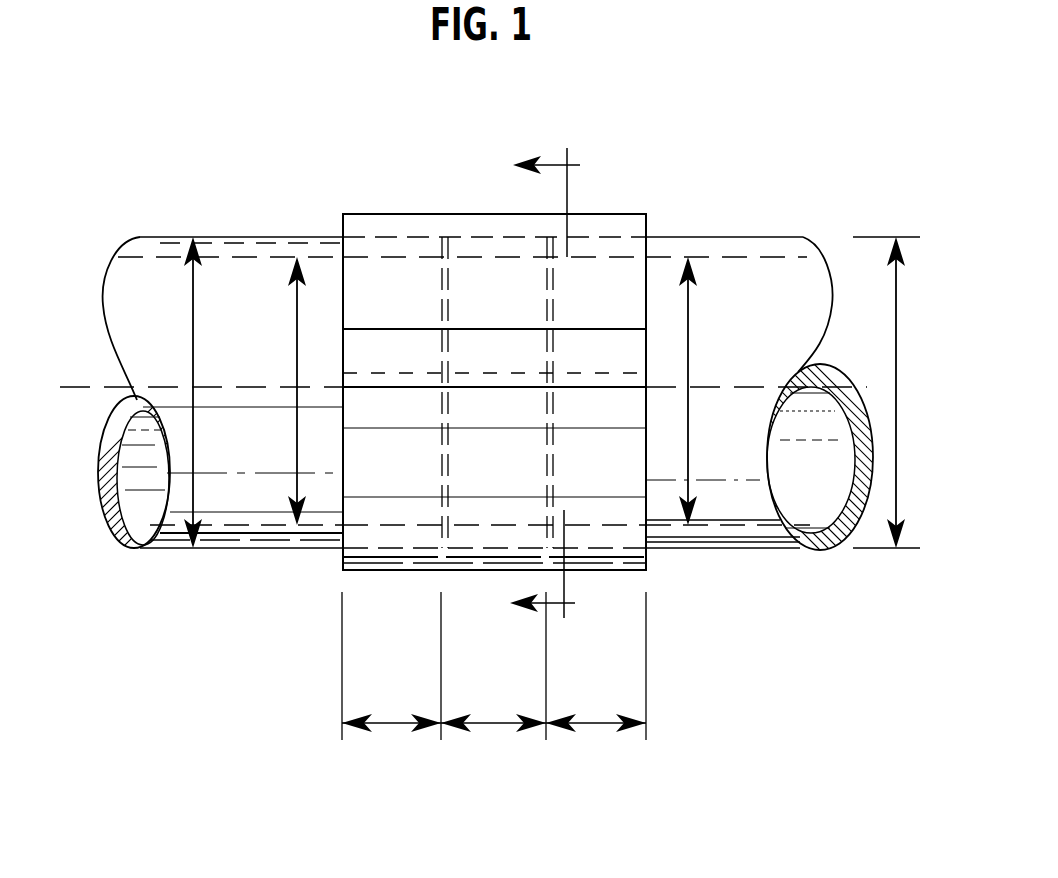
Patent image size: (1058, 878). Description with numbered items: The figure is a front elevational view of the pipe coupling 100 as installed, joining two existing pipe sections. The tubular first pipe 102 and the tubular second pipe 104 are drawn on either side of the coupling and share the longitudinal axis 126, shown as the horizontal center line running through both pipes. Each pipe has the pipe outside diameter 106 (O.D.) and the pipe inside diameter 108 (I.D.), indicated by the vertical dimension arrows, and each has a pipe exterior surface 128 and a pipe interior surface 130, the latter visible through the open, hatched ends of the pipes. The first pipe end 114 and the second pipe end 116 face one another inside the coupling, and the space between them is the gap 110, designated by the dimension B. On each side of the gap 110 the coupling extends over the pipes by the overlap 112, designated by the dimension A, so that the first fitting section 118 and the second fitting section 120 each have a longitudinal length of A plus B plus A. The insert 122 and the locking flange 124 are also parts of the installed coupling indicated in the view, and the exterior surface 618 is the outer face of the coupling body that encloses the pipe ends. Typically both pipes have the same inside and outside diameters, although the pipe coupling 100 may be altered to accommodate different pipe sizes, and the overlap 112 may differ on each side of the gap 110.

The pipe coupling 100 is at (662, 152).
The first pipe 102 is at (218, 243).
The second pipe 104 is at (717, 236).
The pipe outside diameter 106 is at (192, 323).
The pipe inside diameter 108 is at (293, 332).
The gap 110 is at (493, 685).
The overlap 112 is at (494, 685).
The first pipe end 114 is at (443, 277).
The second pipe end 116 is at (574, 392).
The first fitting section 118 is at (598, 262).
The second fitting section 120 is at (578, 533).
The insert 122 is at (488, 522).
The locking flange 124 is at (620, 347).
The longitudinal axis 126 is at (73, 385).
The pipe exterior surface 128 is at (252, 460).
The pipe interior surface 130 is at (159, 505).
The exterior surface 618 is at (410, 475).